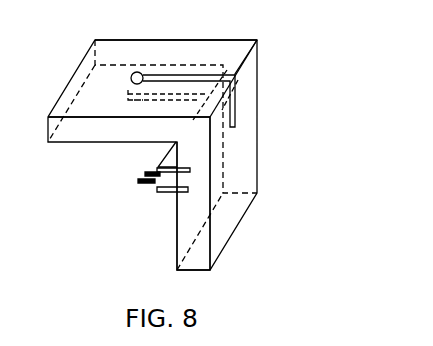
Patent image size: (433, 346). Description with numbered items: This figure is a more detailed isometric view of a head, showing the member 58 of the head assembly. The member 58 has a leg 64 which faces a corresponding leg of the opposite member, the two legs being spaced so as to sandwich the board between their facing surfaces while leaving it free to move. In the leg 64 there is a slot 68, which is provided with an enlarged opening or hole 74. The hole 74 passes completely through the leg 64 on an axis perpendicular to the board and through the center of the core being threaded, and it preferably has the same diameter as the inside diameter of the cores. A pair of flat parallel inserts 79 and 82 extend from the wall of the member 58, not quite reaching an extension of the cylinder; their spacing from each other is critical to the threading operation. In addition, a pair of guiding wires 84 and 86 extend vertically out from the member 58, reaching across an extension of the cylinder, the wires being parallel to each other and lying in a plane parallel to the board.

The member 58 is at (257, 123).
The leg 64 is at (142, 38).
The slot 68 is at (205, 73).
The hole 74 is at (132, 82).
The flat parallel insert 79 is at (172, 193).
The flat parallel insert 82 is at (160, 157).
The guiding wire 84 is at (148, 182).
The guiding wire 86 is at (145, 174).